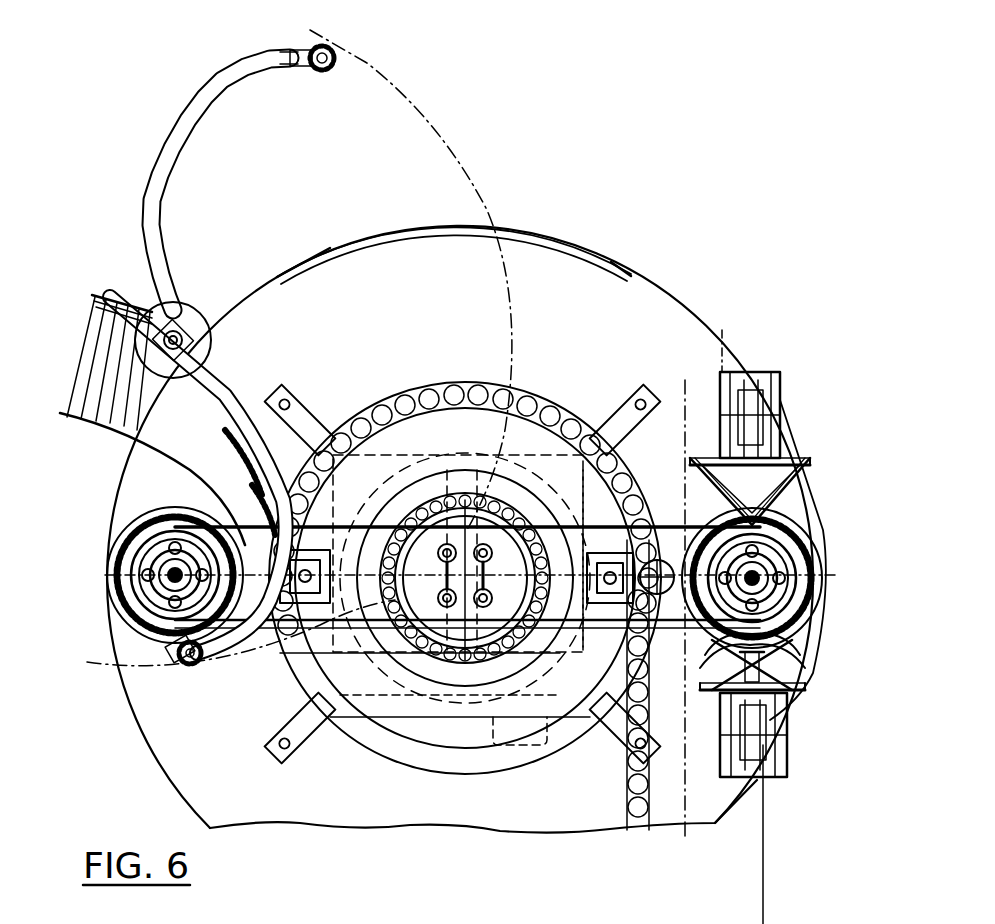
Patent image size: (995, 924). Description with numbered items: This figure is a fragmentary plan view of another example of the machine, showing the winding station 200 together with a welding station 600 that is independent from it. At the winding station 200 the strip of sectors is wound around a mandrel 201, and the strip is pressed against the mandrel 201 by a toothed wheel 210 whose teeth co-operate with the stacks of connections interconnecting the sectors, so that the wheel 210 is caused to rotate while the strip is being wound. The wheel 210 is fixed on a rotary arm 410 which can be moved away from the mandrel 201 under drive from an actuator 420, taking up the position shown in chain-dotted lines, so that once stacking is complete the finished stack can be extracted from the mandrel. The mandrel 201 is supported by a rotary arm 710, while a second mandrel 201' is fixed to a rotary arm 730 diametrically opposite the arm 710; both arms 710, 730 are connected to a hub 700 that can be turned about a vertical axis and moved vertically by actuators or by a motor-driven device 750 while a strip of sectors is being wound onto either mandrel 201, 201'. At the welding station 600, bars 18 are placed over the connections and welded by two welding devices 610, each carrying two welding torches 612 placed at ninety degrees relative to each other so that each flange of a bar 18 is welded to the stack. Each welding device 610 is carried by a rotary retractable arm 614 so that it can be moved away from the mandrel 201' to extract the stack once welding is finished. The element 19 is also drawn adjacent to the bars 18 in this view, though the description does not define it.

The bar 18 is at (800, 632).
The clamp jaw 19 is at (790, 655).
The winding station 200 is at (85, 610).
The mandrel 201 is at (148, 626).
The second mandrel 201' is at (787, 578).
The toothed wheel 210 is at (333, 72).
The rotary arm 410 is at (205, 75).
The actuator 420 is at (117, 278).
The welding station 600 is at (812, 640).
The welding device 610 is at (755, 455).
The welding torch 612 is at (720, 445).
The rotary retractable arm 614 is at (790, 430).
The hub 700 is at (466, 738).
The rotary arm 710 is at (342, 742).
The rotary arm 730 is at (588, 740).
The motor-driven device 750 is at (403, 640).